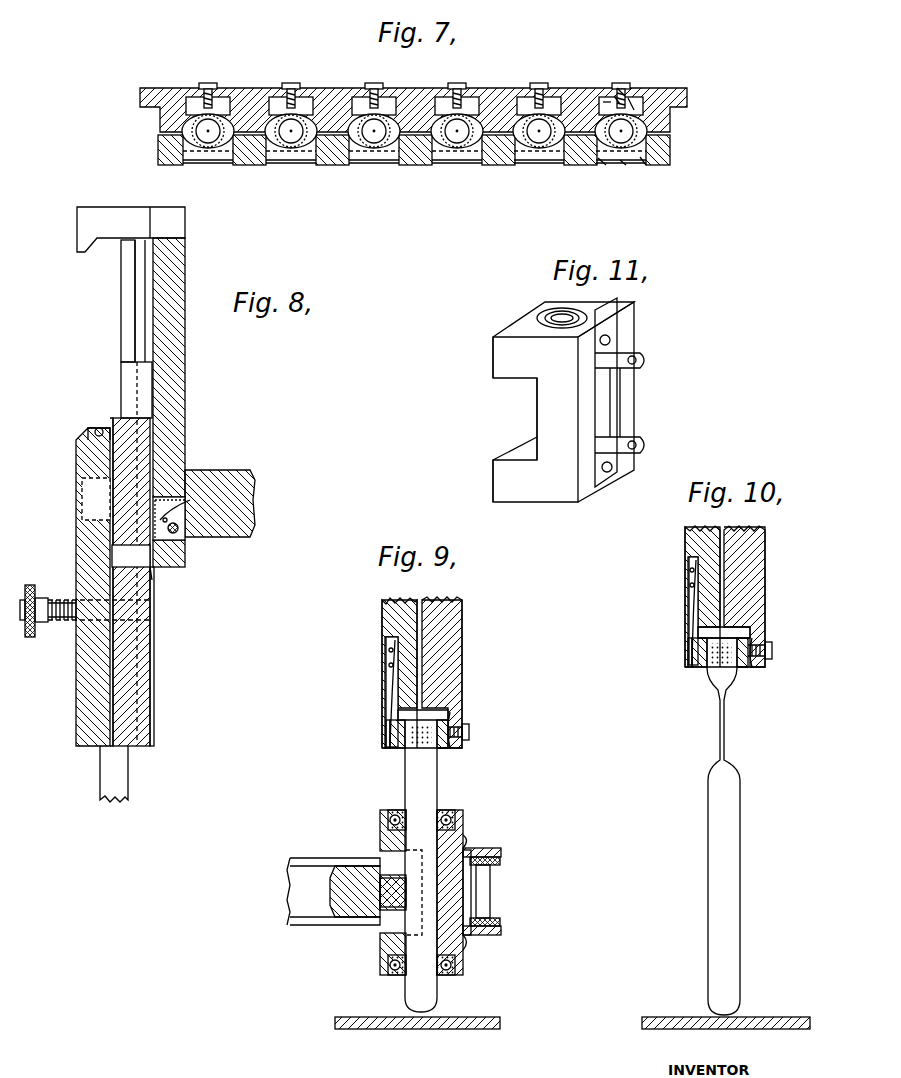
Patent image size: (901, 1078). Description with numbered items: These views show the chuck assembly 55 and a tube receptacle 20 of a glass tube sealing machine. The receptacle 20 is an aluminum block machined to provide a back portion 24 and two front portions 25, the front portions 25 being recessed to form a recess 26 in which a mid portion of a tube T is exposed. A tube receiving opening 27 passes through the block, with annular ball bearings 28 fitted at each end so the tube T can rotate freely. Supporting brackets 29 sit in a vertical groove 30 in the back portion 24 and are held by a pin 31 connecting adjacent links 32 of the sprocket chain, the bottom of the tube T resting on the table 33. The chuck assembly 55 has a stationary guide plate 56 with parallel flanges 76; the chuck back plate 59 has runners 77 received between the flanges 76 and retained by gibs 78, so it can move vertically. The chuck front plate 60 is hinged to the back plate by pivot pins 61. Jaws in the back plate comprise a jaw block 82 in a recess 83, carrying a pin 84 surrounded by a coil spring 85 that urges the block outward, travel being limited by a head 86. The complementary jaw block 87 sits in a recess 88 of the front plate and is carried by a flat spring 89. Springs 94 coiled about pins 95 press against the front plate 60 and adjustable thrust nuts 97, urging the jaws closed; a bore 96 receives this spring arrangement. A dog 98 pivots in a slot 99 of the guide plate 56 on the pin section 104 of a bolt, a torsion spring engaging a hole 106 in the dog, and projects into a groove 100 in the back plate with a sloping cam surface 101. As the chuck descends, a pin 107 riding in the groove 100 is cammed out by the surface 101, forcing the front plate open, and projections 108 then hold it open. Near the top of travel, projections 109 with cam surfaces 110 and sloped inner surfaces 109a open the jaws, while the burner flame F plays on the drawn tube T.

In FIG. 11, the tube receptacle 20 is at (638, 304).
In FIG. 9, the tube receptacle 20 is at (465, 830).
In FIG. 11, the back portion 24 is at (630, 402).
In FIG. 9, the back portion 24 is at (471, 900).
In FIG. 11, the front portion 25 is at (492, 357).
In FIG. 9, the front portion 25 is at (380, 845).
In FIG. 11, the recess 26 is at (522, 405).
In FIG. 9, the recess 26 is at (395, 925).
In FIG. 9, the tube receiving opening 27 is at (495, 904).
In FIG. 11, the annular ball bearings 28 is at (540, 316).
In FIG. 9, the annular ball bearings 28 is at (448, 812).
In FIG. 11, the supporting brackets 29 is at (645, 358).
In FIG. 9, the supporting brackets 29 is at (500, 848).
In FIG. 11, the vertical groove 30 is at (622, 418).
In FIG. 9, the vertical groove 30 is at (490, 886).
In FIG. 9, the pin 31 is at (500, 922).
In FIG. 9, the links 32 is at (500, 864).
In FIG. 9, the table 33 is at (338, 1017).
In FIG. 10, the table 33 is at (650, 1017).
In FIG. 7, the chuck assembly 55 is at (680, 130).
In FIG. 8, the chuck assembly 55 is at (160, 684).
In FIG. 9, the chuck assembly 55 is at (478, 718).
In FIG. 10, the chuck assembly 55 is at (773, 616).
In FIG. 8, the stationary guide plate 56 is at (185, 440).
In FIG. 7, the chuck back plate 59 is at (667, 88).
In FIG. 8, the chuck back plate 59 is at (130, 644).
In FIG. 9, the chuck back plate 59 is at (447, 645).
In FIG. 10, the chuck back plate 59 is at (745, 553).
In FIG. 7, the chuck front plate 60 is at (430, 160).
In FIG. 8, the chuck front plate 60 is at (76, 552).
In FIG. 9, the chuck front plate 60 is at (382, 618).
In FIG. 10, the chuck front plate 60 is at (685, 545).
In FIG. 8, the pivot pins 61 is at (82, 494).
In FIG. 8, the flanges 76 is at (145, 278).
In FIG. 8, the runners 77 is at (121, 372).
In FIG. 8, the gibs 78 is at (121, 312).
In FIG. 7, the jaw block 82 is at (630, 112).
In FIG. 9, the jaw block 82 is at (440, 758).
In FIG. 10, the jaw block 82 is at (760, 636).
In FIG. 7, the recess 83 is at (604, 100).
In FIG. 9, the recess 83 is at (445, 748).
In FIG. 10, the recess 83 is at (750, 672).
In FIG. 7, the pin 84 is at (616, 96).
In FIG. 9, the pin 84 is at (470, 731).
In FIG. 10, the pin 84 is at (772, 656).
In FIG. 7, the coil spring 85 is at (628, 100).
In FIG. 9, the coil spring 85 is at (450, 740).
In FIG. 10, the coil spring 85 is at (752, 668).
In FIG. 7, the head 86 is at (622, 88).
In FIG. 9, the head 86 is at (450, 735).
In FIG. 10, the head 86 is at (752, 652).
In FIG. 7, the jaw block 87 is at (642, 160).
In FIG. 9, the jaw block 87 is at (396, 724).
In FIG. 10, the jaw block 87 is at (692, 645).
In FIG. 7, the recess 88 is at (600, 160).
In FIG. 9, the recess 88 is at (390, 745).
In FIG. 10, the recess 88 is at (692, 665).
In FIG. 7, the flat spring 89 is at (624, 160).
In FIG. 9, the flat spring 89 is at (388, 732).
In FIG. 10, the flat spring 89 is at (690, 652).
In FIG. 8, the springs 94 is at (60, 622).
In FIG. 8, the pin 95 is at (74, 622).
In FIG. 8, the bore 96 is at (72, 578).
In FIG. 8, the adjustable thrust nuts 97 is at (30, 637).
In FIG. 8, the dog 98 is at (186, 560).
In FIG. 8, the slot 99 is at (170, 500).
In FIG. 7, the groove 100 is at (245, 92).
In FIG. 8, the groove 100 is at (154, 622).
In FIG. 8, the sloping cam surface 101 is at (190, 498).
In FIG. 8, the pin section 104 is at (190, 528).
In FIG. 8, the hole 106 is at (185, 512).
In FIG. 8, the pin 107 is at (150, 578).
In FIG. 8, the projections 108 is at (152, 565).
In FIG. 8, the projections 109 is at (78, 452).
In FIG. 8, the inner surfaces 109a is at (98, 425).
In FIG. 8, the cam surfaces 110 is at (88, 436).
In FIG. 7, the tube T is at (296, 140).
In FIG. 8, the tube T is at (100, 778).
In FIG. 9, the tube T is at (405, 786).
In FIG. 10, the tube T is at (724, 772).
In FIG. 9, the burner flame F is at (405, 758).
In FIG. 10, the burner flame F is at (722, 733).